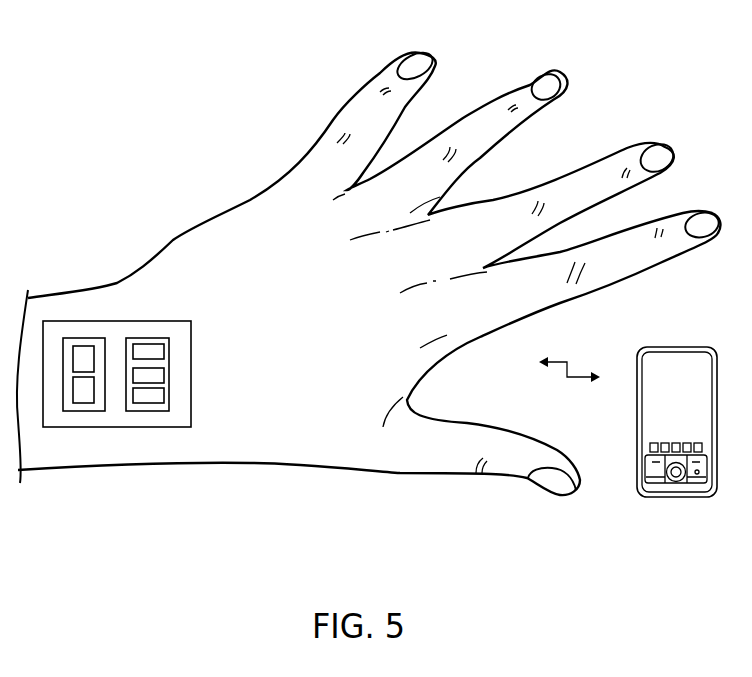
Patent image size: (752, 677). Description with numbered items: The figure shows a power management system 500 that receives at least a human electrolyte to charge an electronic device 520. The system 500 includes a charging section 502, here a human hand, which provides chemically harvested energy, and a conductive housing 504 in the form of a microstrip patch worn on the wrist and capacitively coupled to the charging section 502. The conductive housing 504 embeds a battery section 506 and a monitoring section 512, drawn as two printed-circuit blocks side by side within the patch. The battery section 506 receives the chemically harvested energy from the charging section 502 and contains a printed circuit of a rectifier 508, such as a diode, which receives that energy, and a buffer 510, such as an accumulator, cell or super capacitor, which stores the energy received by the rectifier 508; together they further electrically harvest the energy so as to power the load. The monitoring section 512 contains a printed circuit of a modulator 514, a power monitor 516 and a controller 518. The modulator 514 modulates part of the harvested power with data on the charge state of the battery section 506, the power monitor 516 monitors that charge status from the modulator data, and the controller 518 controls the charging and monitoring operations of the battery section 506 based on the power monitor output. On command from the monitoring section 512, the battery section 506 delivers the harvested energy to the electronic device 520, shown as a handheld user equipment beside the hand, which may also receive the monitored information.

The power management system 500 is at (87, 46).
The charging section 502 is at (173, 240).
The conductive housing 504 is at (96, 305).
The battery section 506 is at (90, 411).
The rectifier 508 is at (83, 346).
The buffer 510 is at (95, 388).
The monitoring section 512 is at (148, 411).
The modulator 514 is at (166, 352).
The power monitor 516 is at (166, 374).
The controller 518 is at (166, 397).
The electronic device 520 is at (690, 347).